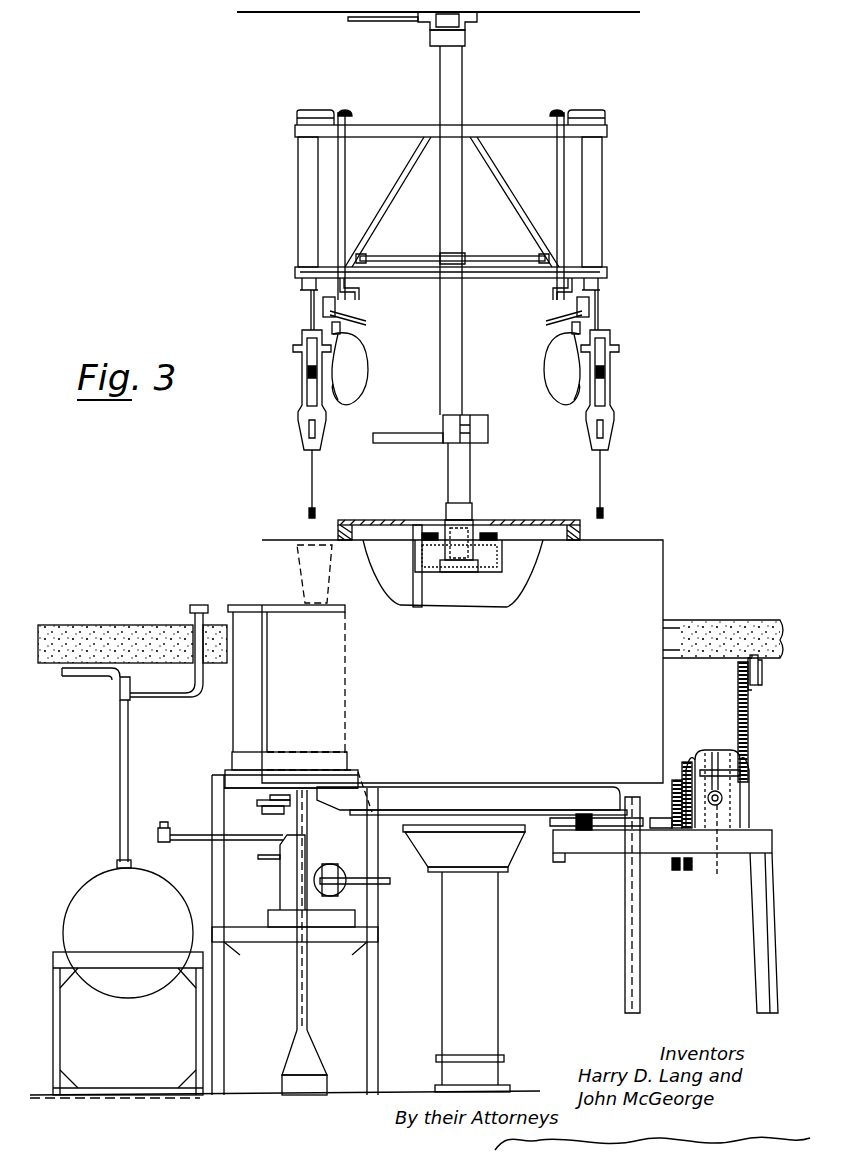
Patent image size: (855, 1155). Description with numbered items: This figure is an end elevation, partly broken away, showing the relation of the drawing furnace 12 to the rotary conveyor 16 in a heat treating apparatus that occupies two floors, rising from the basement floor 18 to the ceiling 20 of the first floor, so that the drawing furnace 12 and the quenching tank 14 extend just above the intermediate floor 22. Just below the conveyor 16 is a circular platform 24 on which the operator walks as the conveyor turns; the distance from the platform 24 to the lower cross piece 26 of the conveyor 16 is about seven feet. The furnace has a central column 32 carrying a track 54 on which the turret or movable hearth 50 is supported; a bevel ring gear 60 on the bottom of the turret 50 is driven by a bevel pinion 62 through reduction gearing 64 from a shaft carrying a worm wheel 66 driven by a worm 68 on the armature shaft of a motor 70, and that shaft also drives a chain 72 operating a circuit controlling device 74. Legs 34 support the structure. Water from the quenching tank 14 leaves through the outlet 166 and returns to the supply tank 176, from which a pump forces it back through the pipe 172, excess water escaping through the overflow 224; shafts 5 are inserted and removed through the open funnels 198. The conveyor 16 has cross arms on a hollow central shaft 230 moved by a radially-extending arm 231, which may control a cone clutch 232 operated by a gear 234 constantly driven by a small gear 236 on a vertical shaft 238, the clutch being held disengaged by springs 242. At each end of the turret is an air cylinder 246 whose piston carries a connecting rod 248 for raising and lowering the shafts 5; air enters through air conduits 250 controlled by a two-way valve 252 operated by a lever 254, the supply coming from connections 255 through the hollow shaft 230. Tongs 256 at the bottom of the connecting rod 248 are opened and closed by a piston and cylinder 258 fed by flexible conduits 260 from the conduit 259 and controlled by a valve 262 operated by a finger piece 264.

The shaft 5 is at (310, 480).
The drawing furnace 12 is at (642, 578).
The quenching tank 14 is at (245, 632).
The rotary conveyor 16 is at (593, 178).
The floor 18 is at (240, 1095).
The ceiling 20 is at (268, 15).
The intermediate floor 22 is at (716, 640).
The circular platform 24 is at (541, 520).
The lower cross piece 26 is at (520, 268).
The central column 32 is at (475, 1008).
The guide rod 34 is at (308, 1008).
The turret 50 is at (497, 797).
The track 54 is at (502, 853).
The bevel ring gear 60 is at (356, 815).
The bevel pinion 62 is at (583, 830).
The reduction gearing 64 is at (682, 838).
The worm wheel 66 is at (712, 752).
The worm 68 is at (704, 845).
The motor 70 is at (740, 818).
The chain 72 is at (738, 710).
The circuit controlling device 74 is at (760, 678).
The outlet 166 is at (203, 612).
The pipe 172 is at (243, 835).
The supply tank 176 is at (127, 990).
The funnels 198 is at (318, 577).
The overflow 224 is at (90, 672).
The hollow central shaft 230 is at (453, 80).
The radially-extending arm 231 is at (394, 433).
The cone clutch 232 is at (470, 505).
The gear 234 is at (497, 612).
The small gear 236 is at (413, 528).
The vertical shaft 238 is at (413, 602).
The springs 242 is at (470, 424).
The air cylinder 246 is at (302, 163).
The connecting rod 248 is at (320, 300).
The air conduits 250 is at (343, 170).
The two-way valve 252 is at (323, 318).
The lever 254 is at (368, 322).
The connections 255 is at (396, 22).
The tongs 256 is at (306, 430).
The piston and cylinder 258 is at (456, 381).
The conduit 259 is at (408, 250).
The flexible conduits 260 is at (365, 370).
The valve 262 is at (341, 330).
The finger piece 264 is at (347, 310).